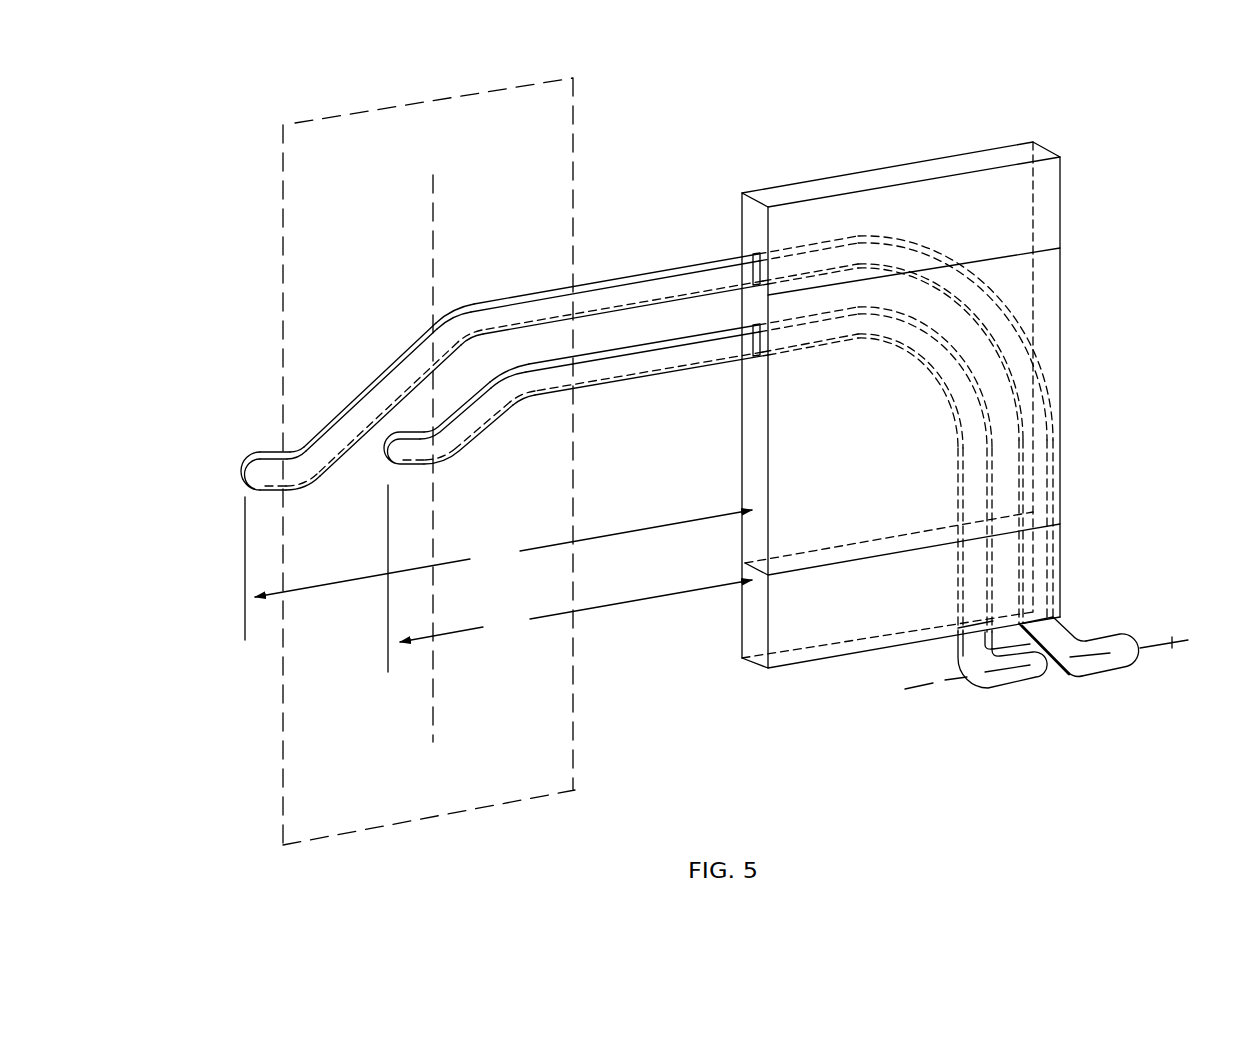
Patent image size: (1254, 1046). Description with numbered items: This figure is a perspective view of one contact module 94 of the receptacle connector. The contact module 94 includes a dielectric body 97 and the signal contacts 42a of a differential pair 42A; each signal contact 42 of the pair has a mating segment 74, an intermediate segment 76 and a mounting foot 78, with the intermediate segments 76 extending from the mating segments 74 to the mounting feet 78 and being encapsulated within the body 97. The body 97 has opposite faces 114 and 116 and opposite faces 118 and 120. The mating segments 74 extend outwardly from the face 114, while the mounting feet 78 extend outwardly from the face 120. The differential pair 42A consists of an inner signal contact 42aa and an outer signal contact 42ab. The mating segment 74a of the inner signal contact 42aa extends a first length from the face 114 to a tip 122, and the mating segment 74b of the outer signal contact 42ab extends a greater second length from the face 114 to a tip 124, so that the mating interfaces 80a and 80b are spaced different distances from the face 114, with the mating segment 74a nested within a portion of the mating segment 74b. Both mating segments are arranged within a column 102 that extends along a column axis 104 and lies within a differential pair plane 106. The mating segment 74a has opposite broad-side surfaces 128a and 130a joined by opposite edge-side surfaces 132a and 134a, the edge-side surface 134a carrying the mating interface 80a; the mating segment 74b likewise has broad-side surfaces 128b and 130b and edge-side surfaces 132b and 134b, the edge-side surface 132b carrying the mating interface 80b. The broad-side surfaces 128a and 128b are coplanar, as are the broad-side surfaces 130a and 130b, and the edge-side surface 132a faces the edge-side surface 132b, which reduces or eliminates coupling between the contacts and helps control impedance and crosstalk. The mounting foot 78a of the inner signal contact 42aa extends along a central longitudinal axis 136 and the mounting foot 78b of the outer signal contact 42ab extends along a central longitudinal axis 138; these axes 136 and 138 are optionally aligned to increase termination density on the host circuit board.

The contact module 94 is at (1197, 105).
The dielectric body 97 is at (1050, 192).
The column 102 is at (203, 425).
The column axis 104 is at (433, 192).
The differential pair plane 106 is at (547, 122).
The face 114 is at (752, 212).
The face 116 is at (1052, 148).
The face 118 is at (797, 190).
The face 120 is at (747, 658).
The tip 122 is at (395, 436).
The tip 124 is at (240, 450).
The broad-side surface 128a is at (647, 392).
The broad-side surface 128b is at (619, 285).
The broad-side surface 130a is at (465, 405).
The broad-side surface 130b is at (600, 283).
The edge-side surface 132a is at (572, 357).
The edge-side surface 132b is at (337, 465).
The edge-side surface 134a is at (600, 392).
The edge-side surface 134b is at (427, 337).
The central longitudinal axis 136 is at (916, 690).
The central longitudinal axis 138 is at (1172, 642).
The signal contact 42 is at (1016, 280).
The differential pair 42A is at (368, 326).
The signal contact 42a is at (684, 250).
The inner signal contact 42aa is at (950, 507).
The outer signal contact 42ab is at (905, 228).
The mating segment 74 is at (470, 303).
The mating segment 74a is at (547, 402).
The mating segment 74b is at (497, 300).
The intermediate segment 76 is at (1023, 336).
The mounting foot 78 is at (1092, 687).
The mounting foot 78a is at (1027, 687).
The mounting foot 78b is at (1072, 680).
The mating interface 80a is at (442, 470).
The mating interface 80b is at (290, 493).